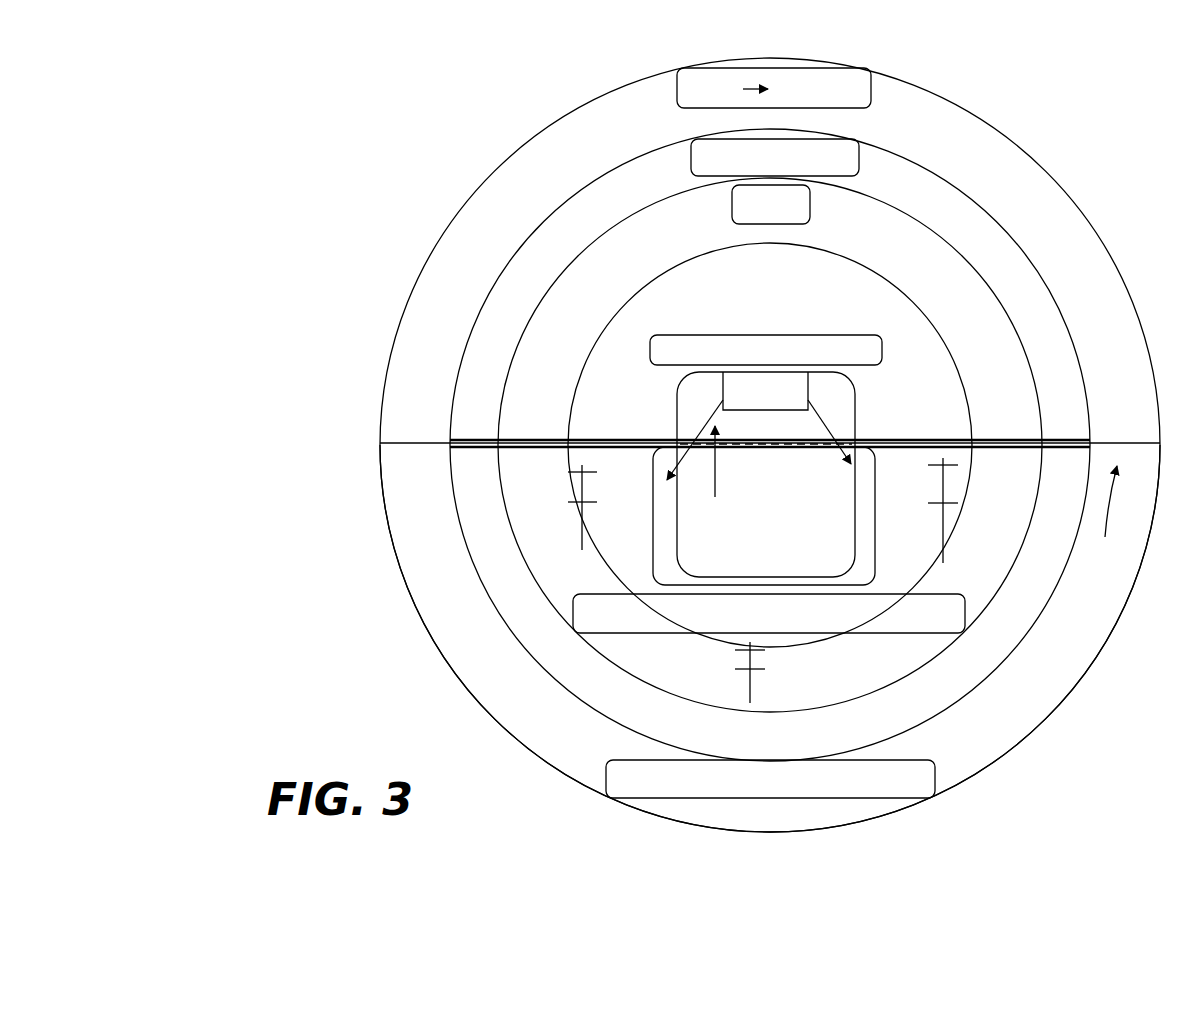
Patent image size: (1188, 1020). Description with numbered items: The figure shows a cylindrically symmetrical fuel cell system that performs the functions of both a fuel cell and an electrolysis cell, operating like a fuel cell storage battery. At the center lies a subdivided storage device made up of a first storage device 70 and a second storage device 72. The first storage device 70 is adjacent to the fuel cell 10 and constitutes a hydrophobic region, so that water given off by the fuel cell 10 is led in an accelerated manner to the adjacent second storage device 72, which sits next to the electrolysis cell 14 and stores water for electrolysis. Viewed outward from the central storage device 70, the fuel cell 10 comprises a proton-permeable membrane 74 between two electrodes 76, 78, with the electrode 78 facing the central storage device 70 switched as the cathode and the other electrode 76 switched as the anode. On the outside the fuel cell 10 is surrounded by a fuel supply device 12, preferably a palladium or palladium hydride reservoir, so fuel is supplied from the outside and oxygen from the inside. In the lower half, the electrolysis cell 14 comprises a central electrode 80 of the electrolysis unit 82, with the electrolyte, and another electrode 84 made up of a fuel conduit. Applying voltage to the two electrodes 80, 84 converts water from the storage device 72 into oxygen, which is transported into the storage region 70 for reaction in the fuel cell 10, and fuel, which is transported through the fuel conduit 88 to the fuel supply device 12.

The fuel cell 10 is at (446, 222).
The fuel supply device 12 is at (438, 313).
The electrolysis cell 14 is at (433, 649).
The first storage device 70 is at (862, 398).
The second storage device 72 is at (789, 561).
The proton-permeable membrane 74 is at (620, 284).
The electrode 76 is at (571, 251).
The electrode 78 is at (783, 294).
The central electrode 80 is at (875, 566).
The electrolysis unit 82 is at (546, 579).
The electrode 84 is at (528, 718).
The fuel conduit 88 is at (412, 471).